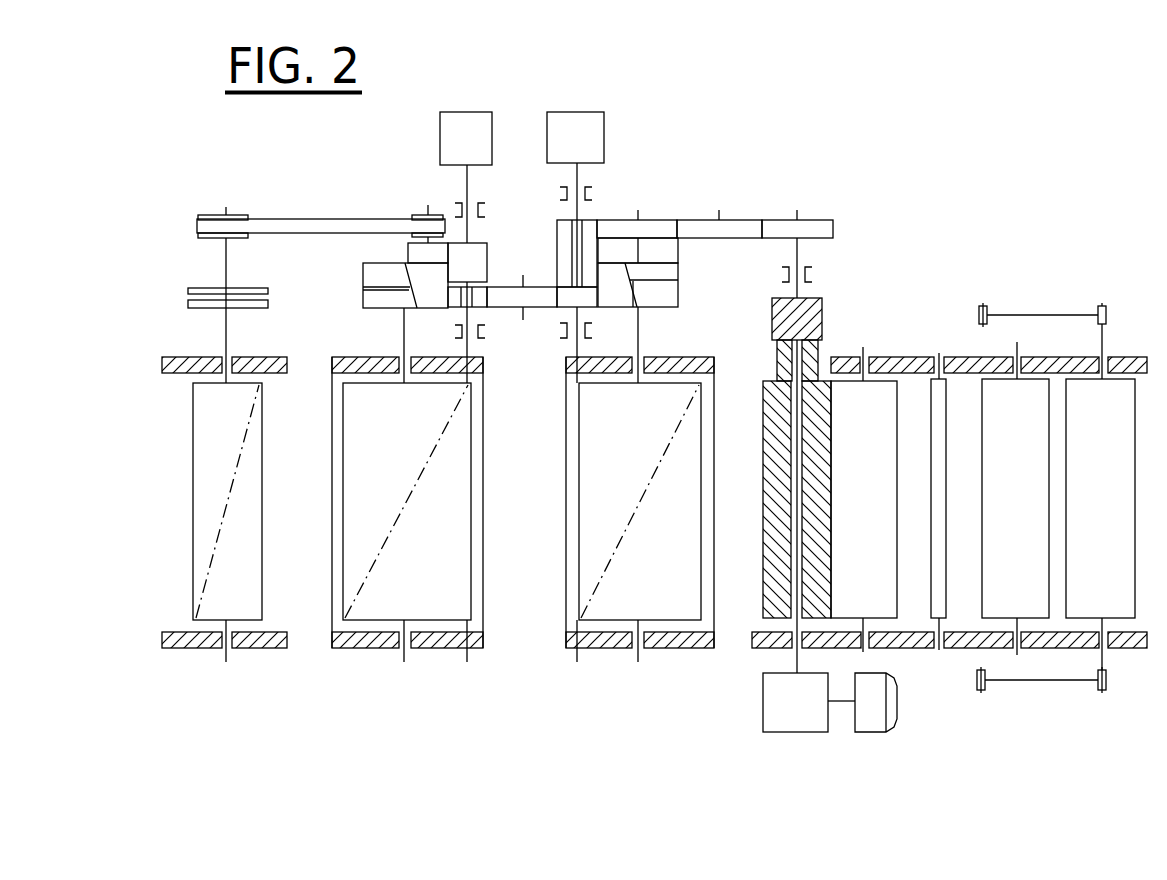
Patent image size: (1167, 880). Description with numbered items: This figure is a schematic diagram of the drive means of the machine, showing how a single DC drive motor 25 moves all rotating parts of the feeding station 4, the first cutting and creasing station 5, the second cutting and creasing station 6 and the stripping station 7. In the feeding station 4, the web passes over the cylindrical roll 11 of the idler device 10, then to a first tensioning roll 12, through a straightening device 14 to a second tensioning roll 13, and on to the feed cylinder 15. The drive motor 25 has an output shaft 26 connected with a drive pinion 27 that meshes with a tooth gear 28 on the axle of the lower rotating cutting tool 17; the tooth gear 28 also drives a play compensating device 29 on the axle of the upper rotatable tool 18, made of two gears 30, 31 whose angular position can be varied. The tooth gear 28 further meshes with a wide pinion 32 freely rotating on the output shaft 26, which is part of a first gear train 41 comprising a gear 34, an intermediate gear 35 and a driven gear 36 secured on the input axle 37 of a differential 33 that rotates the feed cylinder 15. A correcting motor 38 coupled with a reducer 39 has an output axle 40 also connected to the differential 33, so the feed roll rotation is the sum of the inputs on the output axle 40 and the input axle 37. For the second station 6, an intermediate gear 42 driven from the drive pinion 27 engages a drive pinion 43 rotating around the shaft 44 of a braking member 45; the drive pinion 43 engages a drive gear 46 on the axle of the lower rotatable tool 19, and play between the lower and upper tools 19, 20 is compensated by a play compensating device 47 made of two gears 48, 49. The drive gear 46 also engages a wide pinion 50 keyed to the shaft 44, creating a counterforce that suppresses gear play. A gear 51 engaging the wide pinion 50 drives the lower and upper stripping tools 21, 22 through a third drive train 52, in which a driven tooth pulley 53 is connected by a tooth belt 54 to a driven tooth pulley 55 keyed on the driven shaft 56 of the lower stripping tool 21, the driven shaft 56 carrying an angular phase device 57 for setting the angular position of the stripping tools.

The feeding station 4 is at (964, 648).
The first cutting and creasing station 5 is at (618, 649).
The second cutting and creasing station 6 is at (428, 649).
The stripping station 7 is at (173, 648).
The idler device 10 is at (1041, 282).
The cylindrical roll 11 is at (1111, 598).
The first tensioning roll 12 is at (1031, 591).
The second tensioning roll 13 is at (1036, 287).
The straightening device 14 is at (919, 592).
The feed cylinder 15 is at (765, 588).
The lower rotating cutting tool 17 is at (665, 567).
The upper rotatable tool 18 is at (593, 539).
The lower rotatable tool 19 is at (457, 559).
The upper rotatable tool 20 is at (361, 534).
The lower stripping tool 21 is at (207, 518).
The upper stripping tool 22 is at (253, 580).
The drive motor 25 is at (595, 144).
The output shaft 26 is at (577, 176).
The drive pinion 27 is at (572, 298).
The tooth gear 28 is at (617, 283).
The play compensating device 29 is at (695, 292).
The gear 30 is at (667, 298).
The gear 31 is at (670, 267).
The wide pinion 32 is at (593, 220).
The differential 33 is at (885, 381).
The gear 34 is at (663, 227).
The intermediate gear 35 is at (763, 200).
The driven gear 36 is at (797, 257).
The input axle 37 is at (813, 310).
The correcting motor 38 is at (874, 721).
The reducer 39 is at (779, 713).
The output axle 40 is at (799, 660).
The first gear train 41 is at (823, 223).
The intermediate gear 42 is at (543, 297).
The drive pinion 43 is at (478, 303).
The shaft 44 is at (466, 198).
The braking member 45 is at (450, 155).
The drive gear 46 is at (435, 298).
The play compensating device 47 is at (338, 306).
The gear 48 is at (377, 298).
The gear 49 is at (383, 275).
The wide pinion 50 is at (477, 257).
The gear 51 is at (440, 247).
The third drive train 52 is at (262, 207).
The driven tooth pulley 53 is at (413, 215).
The tooth belt 54 is at (302, 223).
The driven tooth pulley 55 is at (207, 215).
The driven shaft 56 is at (225, 258).
The angular phase device 57 is at (168, 293).